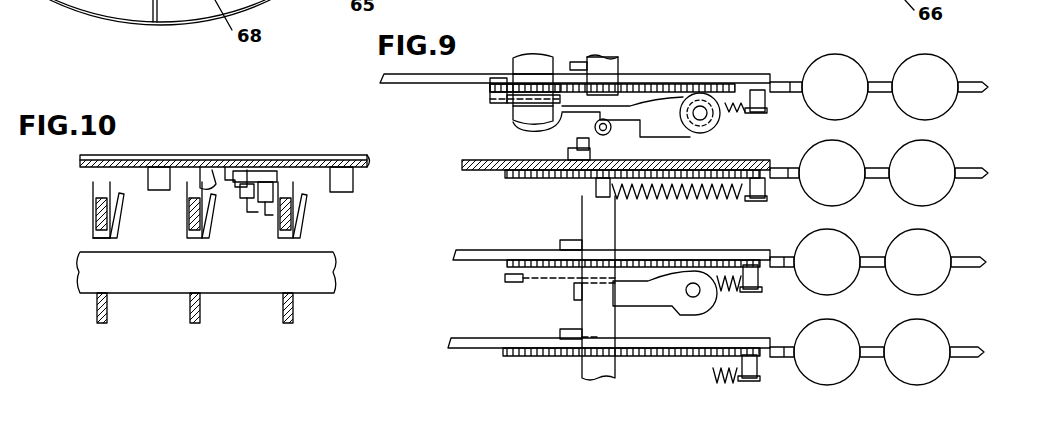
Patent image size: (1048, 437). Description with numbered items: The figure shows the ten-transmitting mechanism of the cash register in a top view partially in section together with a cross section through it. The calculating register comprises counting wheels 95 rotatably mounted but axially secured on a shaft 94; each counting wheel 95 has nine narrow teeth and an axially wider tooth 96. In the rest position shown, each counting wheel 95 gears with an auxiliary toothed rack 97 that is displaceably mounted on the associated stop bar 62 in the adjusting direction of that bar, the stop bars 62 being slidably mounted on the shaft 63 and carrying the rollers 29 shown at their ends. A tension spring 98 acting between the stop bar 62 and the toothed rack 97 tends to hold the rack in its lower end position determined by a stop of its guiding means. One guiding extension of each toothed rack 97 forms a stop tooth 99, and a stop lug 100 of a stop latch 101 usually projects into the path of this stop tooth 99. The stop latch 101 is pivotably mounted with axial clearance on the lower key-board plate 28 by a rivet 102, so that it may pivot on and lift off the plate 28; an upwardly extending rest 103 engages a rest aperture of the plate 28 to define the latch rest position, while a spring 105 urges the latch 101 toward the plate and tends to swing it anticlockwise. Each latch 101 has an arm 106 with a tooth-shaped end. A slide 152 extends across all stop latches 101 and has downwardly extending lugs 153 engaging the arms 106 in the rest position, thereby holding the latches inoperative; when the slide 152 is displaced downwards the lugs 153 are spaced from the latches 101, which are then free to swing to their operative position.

In FIG. 10, the lower key-board plate 28 is at (368, 161).
In FIG. 9, the lower key-board plate 28 is at (616, 165).
In FIG. 9, the rollers 29 is at (910, 163).
In FIG. 10, the stop bar 62 is at (107, 305).
In FIG. 9, the stop bar 62 is at (988, 86).
In FIG. 10, the shaft 63 is at (325, 270).
In FIG. 9, the shaft 94 is at (530, 68).
In FIG. 9, the counting wheel 95 is at (510, 84).
In FIG. 9, the axially wider tooth 96 is at (490, 100).
In FIG. 10, the auxiliary toothed rack 97 is at (93, 218).
In FIG. 9, the auxiliary toothed rack 97 is at (648, 84).
In FIG. 9, the tension spring 98 is at (700, 200).
In FIG. 10, the stop tooth 99 is at (118, 212).
In FIG. 9, the stop tooth 99 is at (568, 154).
In FIG. 10, the stop lug 100 is at (207, 175).
In FIG. 9, the stop lug 100 is at (580, 148).
In FIG. 10, the stop latch 101 is at (236, 168).
In FIG. 9, the stop latch 101 is at (622, 125).
In FIG. 10, the rivet 102 is at (290, 172).
In FIG. 9, the rivet 102 is at (708, 128).
In FIG. 9, the rest 103 is at (612, 124).
In FIG. 10, the spring 105 is at (273, 188).
In FIG. 9, the spring 105 is at (713, 118).
In FIG. 10, the arm 106 is at (254, 200).
In FIG. 9, the arm 106 is at (540, 129).
In FIG. 10, the slide 152 is at (134, 156).
In FIG. 9, the slide 152 is at (600, 62).
In FIG. 10, the lug 153 is at (153, 180).
In FIG. 9, the lug 153 is at (577, 201).